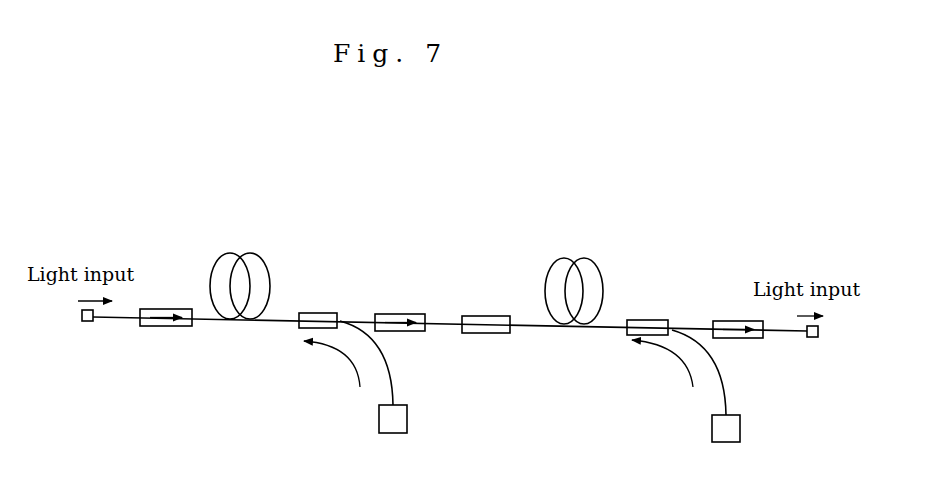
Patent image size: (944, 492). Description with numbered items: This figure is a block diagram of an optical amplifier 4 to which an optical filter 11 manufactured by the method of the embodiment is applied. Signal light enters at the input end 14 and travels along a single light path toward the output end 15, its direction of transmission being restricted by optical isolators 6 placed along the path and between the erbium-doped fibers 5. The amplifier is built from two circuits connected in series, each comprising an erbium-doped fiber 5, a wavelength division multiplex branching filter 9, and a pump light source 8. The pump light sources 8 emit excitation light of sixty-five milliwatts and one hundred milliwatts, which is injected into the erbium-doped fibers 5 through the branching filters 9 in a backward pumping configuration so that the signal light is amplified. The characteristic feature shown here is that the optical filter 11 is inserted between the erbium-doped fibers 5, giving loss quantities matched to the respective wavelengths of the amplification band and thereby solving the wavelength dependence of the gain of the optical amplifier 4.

The optical amplifier 4 is at (208, 360).
The erbium-doped fiber 5 is at (233, 252).
The optical isolator 6 is at (162, 308).
The pump light source 8 is at (407, 424).
The wavelength division multiplex branching filter 9 is at (315, 312).
The optical filter 11 is at (493, 333).
The input end 14 is at (88, 322).
The output end 15 is at (812, 337).